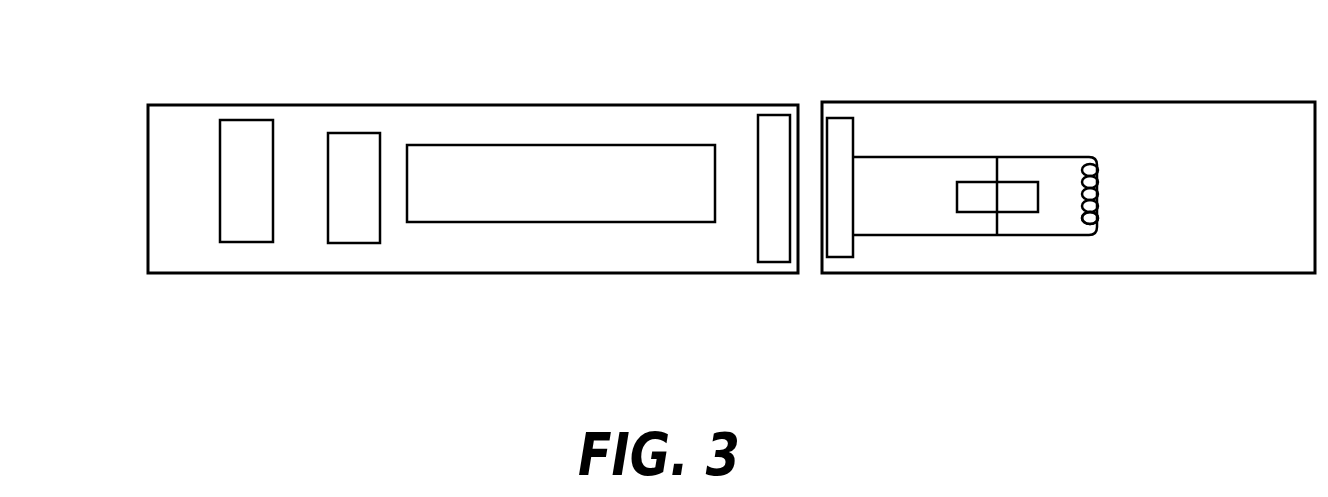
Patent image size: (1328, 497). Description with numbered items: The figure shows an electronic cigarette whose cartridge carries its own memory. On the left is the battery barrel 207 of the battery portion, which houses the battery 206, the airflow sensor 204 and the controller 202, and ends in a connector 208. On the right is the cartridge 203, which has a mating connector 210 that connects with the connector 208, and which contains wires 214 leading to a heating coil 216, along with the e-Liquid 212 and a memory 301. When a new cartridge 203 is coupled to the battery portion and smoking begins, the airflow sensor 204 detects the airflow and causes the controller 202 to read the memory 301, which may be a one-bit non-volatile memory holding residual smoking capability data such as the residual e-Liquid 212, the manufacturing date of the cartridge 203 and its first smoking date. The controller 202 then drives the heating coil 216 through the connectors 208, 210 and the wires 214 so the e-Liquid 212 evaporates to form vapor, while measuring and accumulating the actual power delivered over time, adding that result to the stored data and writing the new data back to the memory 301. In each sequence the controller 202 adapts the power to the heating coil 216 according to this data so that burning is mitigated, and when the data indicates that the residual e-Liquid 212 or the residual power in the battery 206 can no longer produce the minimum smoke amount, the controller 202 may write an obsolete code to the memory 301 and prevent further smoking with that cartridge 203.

The controller 202 is at (356, 252).
The cartridge 203 is at (1279, 102).
The airflow sensor 204 is at (208, 233).
The battery 206 is at (484, 233).
The battery barrel 207 is at (664, 94).
The connector 208 is at (747, 245).
The connector 210 is at (852, 270).
The e-Liquid 212 is at (1110, 226).
The wires 214 is at (885, 224).
The heating coil 216 is at (1110, 174).
The memory 301 is at (1018, 172).